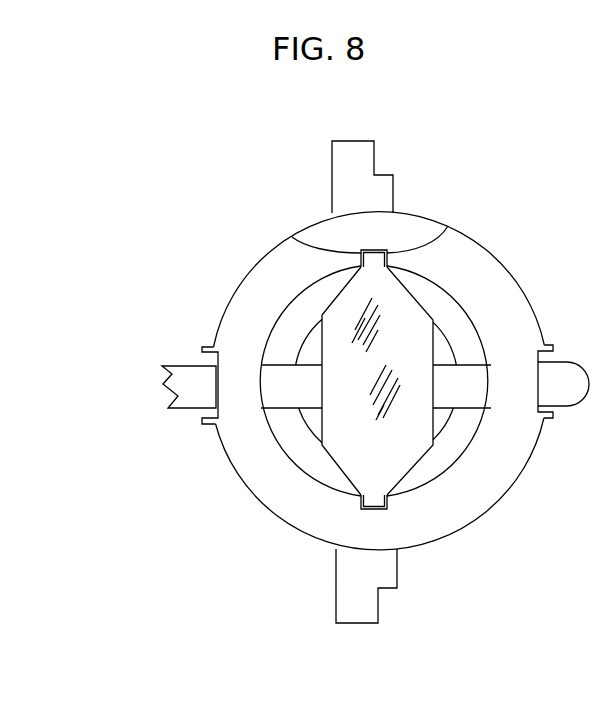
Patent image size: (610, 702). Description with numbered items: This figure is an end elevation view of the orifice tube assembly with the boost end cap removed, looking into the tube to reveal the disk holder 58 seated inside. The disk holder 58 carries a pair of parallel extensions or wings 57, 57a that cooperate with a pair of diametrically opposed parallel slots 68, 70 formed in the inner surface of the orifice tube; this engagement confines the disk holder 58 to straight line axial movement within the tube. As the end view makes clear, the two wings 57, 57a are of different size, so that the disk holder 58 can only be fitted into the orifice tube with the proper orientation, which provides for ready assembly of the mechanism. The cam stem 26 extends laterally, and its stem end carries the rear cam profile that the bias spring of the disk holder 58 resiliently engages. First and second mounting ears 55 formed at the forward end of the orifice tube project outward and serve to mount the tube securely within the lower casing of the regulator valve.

The parallel slot 70 is at (292, 237).
The wing 57 is at (448, 226).
The disk holder 58 is at (430, 304).
The parallel slot 68 is at (358, 500).
The wing 57a is at (398, 496).
The mounting ear 55 is at (386, 173).
The cam stem 26 is at (183, 356).